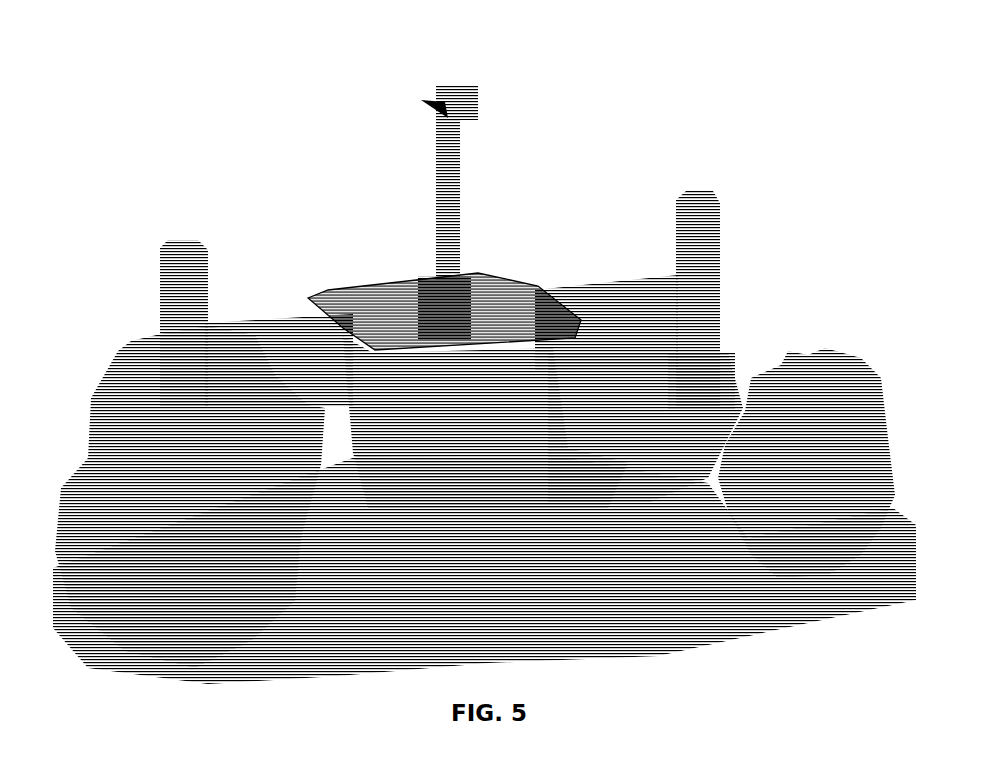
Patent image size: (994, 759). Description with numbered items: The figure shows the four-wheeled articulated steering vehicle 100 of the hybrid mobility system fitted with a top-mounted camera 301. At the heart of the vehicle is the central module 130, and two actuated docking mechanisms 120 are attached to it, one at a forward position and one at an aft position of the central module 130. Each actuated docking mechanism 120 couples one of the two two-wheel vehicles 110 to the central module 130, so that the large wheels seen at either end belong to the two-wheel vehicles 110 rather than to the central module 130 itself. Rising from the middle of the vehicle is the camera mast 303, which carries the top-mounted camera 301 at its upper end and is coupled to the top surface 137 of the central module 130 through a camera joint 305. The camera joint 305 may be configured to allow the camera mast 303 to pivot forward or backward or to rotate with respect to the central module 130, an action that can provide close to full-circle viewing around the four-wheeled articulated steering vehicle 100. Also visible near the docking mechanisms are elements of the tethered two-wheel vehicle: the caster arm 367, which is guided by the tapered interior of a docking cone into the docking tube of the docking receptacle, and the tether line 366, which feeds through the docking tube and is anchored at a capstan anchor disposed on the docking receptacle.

The four-wheeled articulated steering vehicle 100 is at (459, 37).
The top-mounted camera 301 is at (425, 90).
The camera mast 303 is at (437, 183).
The camera joint 305 is at (400, 268).
The top surface 137 is at (500, 268).
The actuated docking mechanism 120 is at (255, 298).
The tether line 366 is at (690, 192).
The caster arm 367 is at (688, 352).
The two-wheel vehicle 110 is at (301, 565).
The central module 130 is at (472, 497).